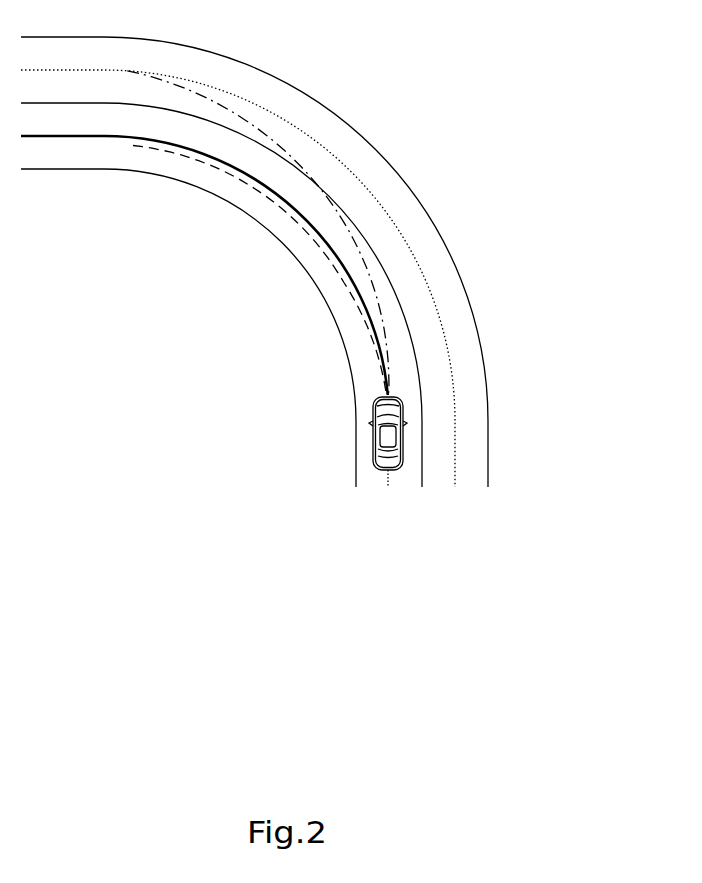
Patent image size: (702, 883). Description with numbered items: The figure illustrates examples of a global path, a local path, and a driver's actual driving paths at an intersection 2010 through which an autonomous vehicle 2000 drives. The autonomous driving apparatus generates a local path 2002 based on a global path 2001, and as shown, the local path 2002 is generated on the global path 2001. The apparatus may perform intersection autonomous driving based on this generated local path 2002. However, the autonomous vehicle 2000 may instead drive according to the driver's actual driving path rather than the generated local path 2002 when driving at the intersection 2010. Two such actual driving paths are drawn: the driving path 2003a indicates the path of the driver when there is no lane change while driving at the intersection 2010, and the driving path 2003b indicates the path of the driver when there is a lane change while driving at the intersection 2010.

The autonomous vehicle 2000 is at (373, 438).
The global path 2001 is at (455, 415).
The local path 2002 is at (297, 214).
The driving path of the driver (no lane change) 2003a is at (219, 170).
The driving path of the driver (lane change) 2003b is at (213, 100).
The intersection 2010 is at (341, 343).